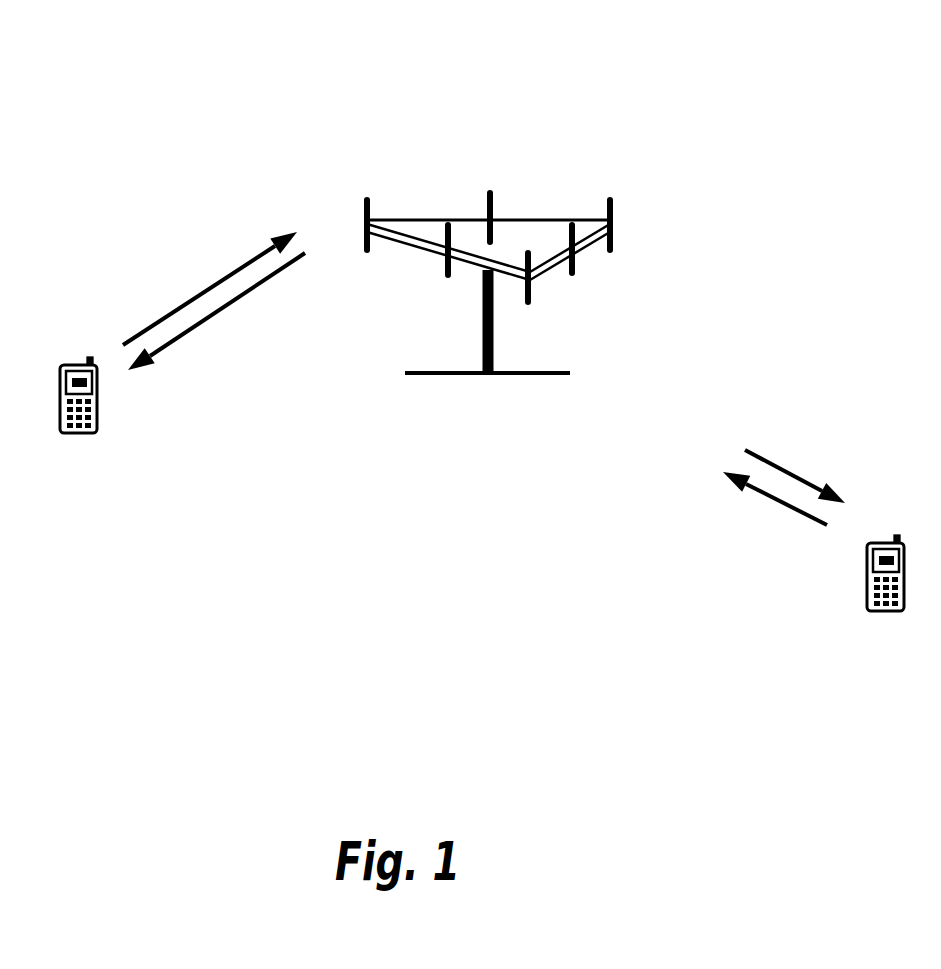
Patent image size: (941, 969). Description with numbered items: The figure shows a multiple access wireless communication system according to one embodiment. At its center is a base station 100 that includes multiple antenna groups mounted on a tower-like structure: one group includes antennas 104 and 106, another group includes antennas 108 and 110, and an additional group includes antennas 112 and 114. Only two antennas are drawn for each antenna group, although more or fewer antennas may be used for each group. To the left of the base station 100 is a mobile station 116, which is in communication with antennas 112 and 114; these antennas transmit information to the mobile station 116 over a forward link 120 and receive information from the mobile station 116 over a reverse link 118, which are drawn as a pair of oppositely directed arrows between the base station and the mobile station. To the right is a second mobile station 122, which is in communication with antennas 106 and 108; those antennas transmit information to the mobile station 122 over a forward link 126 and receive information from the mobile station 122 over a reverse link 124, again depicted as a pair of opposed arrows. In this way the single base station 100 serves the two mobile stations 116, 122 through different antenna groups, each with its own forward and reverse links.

The base station 100 is at (462, 377).
The antenna 104 is at (528, 298).
The antenna 106 is at (572, 272).
The antenna 108 is at (612, 242).
The antenna 110 is at (493, 195).
The antenna 112 is at (367, 213).
The antenna 114 is at (447, 276).
The mobile station 116 is at (78, 367).
The reverse link 118 is at (206, 288).
The forward link 120 is at (225, 302).
The mobile station 122 is at (884, 543).
The reverse link 124 is at (762, 488).
The forward link 126 is at (796, 477).